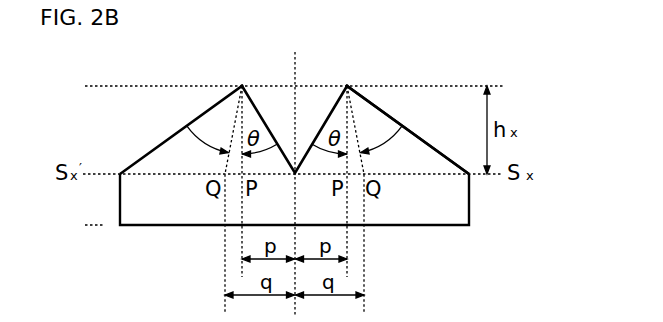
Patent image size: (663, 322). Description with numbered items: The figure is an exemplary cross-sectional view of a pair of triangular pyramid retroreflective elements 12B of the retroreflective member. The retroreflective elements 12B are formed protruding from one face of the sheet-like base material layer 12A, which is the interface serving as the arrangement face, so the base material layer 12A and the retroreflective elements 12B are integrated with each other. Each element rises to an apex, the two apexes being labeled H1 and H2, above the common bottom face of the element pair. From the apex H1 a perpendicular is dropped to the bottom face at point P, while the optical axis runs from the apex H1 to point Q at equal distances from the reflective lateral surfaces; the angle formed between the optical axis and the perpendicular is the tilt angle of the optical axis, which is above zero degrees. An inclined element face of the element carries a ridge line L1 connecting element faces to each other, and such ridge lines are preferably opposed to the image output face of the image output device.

The base material layer 12A is at (107, 174).
The retroreflective elements 12B is at (107, 86).
The ridge line L1 is at (440, 152).
The apex H1 is at (347, 73).
The apex H2 is at (247, 73).